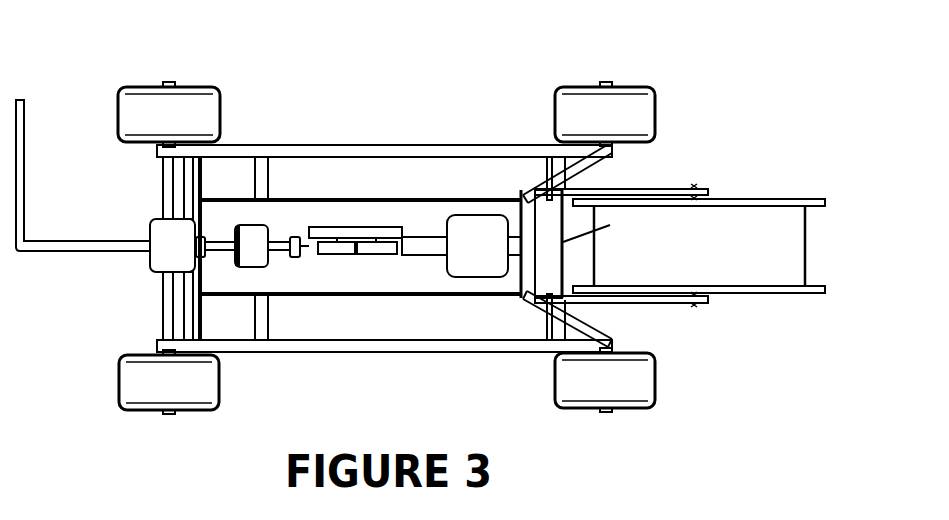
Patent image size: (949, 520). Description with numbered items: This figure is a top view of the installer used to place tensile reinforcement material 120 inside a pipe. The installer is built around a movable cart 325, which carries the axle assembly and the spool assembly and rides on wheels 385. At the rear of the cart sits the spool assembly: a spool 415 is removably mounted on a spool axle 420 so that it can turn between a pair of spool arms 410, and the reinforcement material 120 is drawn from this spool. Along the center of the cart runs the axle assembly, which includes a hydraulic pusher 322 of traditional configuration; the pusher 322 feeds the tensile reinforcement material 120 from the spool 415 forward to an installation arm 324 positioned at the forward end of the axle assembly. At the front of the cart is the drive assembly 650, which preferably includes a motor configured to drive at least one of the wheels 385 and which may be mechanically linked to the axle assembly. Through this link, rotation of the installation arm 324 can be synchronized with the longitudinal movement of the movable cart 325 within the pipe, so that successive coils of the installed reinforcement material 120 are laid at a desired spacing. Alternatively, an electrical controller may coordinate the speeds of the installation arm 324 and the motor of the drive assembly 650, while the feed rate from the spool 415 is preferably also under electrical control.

The tensile reinforcement material 120 is at (687, 245).
The hydraulic pusher 322 is at (375, 228).
The installation arm 324 is at (21, 117).
The movable cart 325 is at (367, 146).
The wheels 385 is at (202, 108).
The spool arms 410 is at (657, 190).
The spool 415 is at (773, 200).
The spool axle 420 is at (694, 186).
The drive assembly 650 is at (148, 262).